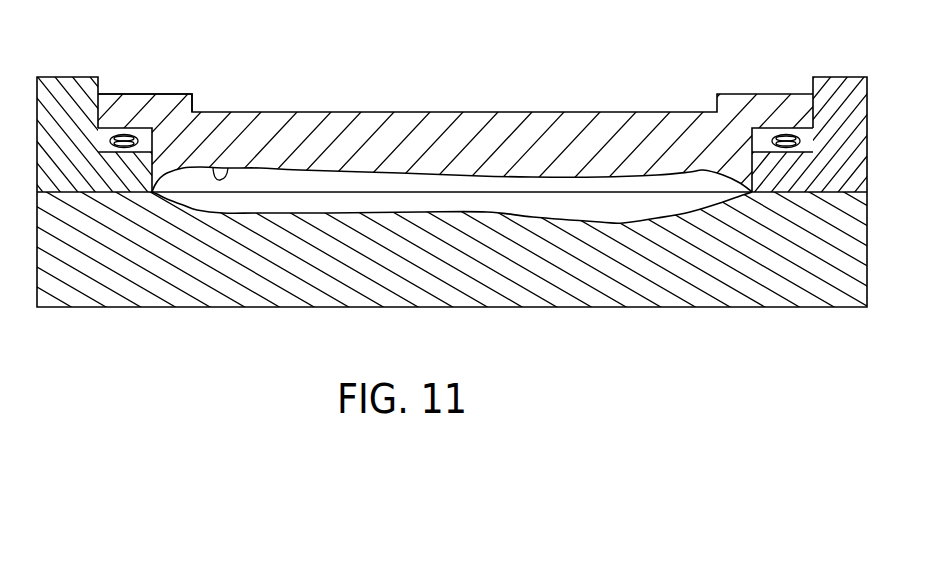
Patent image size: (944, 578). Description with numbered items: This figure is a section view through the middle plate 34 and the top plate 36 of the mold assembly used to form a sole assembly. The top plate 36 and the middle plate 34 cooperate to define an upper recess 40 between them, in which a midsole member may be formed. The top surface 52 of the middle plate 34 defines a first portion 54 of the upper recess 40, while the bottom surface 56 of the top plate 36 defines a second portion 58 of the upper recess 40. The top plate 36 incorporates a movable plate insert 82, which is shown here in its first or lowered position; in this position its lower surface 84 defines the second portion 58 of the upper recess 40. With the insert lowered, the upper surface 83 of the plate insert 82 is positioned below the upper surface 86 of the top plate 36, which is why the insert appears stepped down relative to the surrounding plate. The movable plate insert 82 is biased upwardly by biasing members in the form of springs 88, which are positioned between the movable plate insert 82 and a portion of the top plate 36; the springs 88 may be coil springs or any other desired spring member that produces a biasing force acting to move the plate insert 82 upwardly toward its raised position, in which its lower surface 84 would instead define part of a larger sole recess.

The middle plate 34 is at (113, 297).
The top plate 36 is at (840, 88).
The upper recess 40 is at (660, 216).
The top surface of middle plate 52 is at (117, 192).
The first portion of upper recess 54 is at (542, 213).
The bottom surface of top plate 56 is at (803, 193).
The second portion of upper recess 58 is at (230, 173).
The movable plate insert 82 is at (470, 122).
The upper surface of plate insert 83 is at (147, 94).
The lower surface of plate insert 84 is at (300, 172).
The upper surface of top plate 86 is at (69, 76).
The springs 88 is at (153, 146).